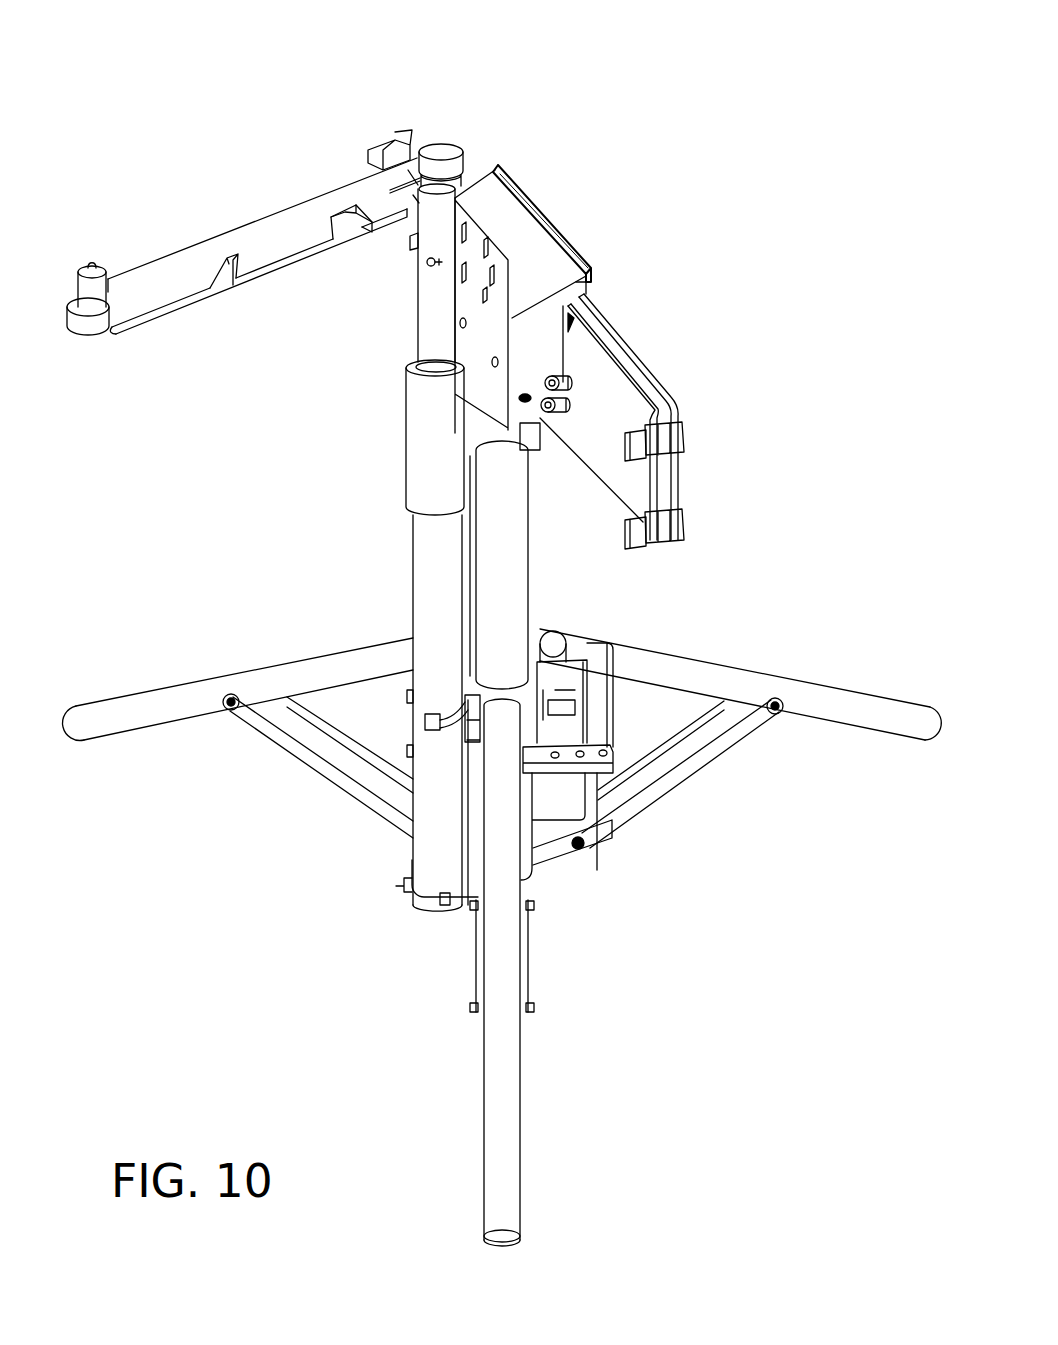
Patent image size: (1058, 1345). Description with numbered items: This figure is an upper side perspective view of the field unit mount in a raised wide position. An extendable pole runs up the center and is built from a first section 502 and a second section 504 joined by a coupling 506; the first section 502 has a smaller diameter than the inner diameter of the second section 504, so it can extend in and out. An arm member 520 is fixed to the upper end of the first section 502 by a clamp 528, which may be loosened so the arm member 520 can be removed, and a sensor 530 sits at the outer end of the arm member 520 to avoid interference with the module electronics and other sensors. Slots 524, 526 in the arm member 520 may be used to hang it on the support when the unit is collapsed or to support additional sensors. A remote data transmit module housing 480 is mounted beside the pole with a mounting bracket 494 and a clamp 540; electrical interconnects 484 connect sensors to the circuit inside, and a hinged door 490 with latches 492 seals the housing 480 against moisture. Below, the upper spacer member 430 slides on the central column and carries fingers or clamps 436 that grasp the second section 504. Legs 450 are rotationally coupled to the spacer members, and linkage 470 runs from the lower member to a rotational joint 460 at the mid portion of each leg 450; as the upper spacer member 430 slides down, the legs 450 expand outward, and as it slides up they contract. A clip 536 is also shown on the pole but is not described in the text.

The upper spacer member 430 is at (527, 697).
The fingers or clamps 436 is at (433, 730).
The legs 450 is at (127, 713).
The rotational joint 460 is at (780, 710).
The linkage 470 is at (682, 777).
The housing 480 is at (500, 167).
The electrical interconnects 484 is at (563, 382).
The hinged door 490 is at (660, 380).
The latches 492 is at (680, 440).
The mounting bracket 494 is at (470, 237).
The first section 502 is at (430, 327).
The second section 504 is at (427, 570).
The coupling 506 is at (405, 438).
The arm member 520 is at (173, 258).
The slot 524 is at (223, 287).
The slot 526 is at (360, 230).
The clamp 528 is at (382, 147).
The sensor 530 is at (92, 310).
The clip 536 is at (412, 240).
The clamp 540 is at (442, 905).